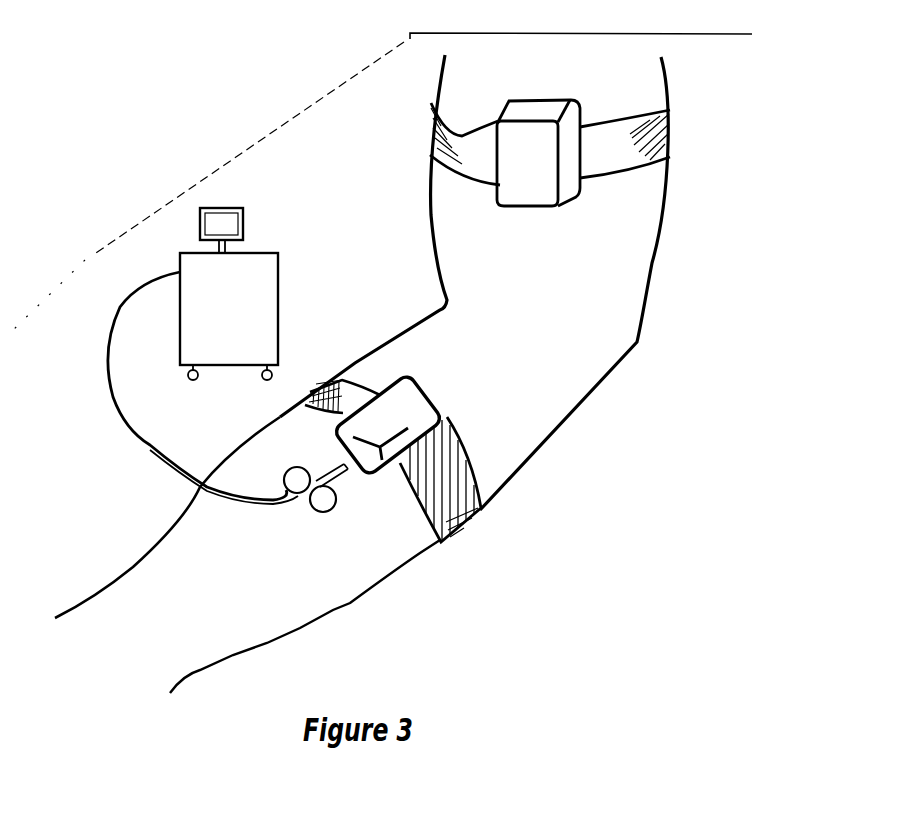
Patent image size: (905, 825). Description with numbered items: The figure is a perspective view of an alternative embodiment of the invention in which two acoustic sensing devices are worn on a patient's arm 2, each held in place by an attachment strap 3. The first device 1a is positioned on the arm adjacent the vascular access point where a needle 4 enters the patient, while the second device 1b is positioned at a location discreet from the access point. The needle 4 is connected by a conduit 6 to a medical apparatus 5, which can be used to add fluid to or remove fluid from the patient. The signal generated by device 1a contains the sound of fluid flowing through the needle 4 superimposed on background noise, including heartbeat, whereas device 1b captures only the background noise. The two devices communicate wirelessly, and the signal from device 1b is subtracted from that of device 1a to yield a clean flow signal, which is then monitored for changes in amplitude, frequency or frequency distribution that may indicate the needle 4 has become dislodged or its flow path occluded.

The device 1a is at (393, 407).
The device 1b is at (520, 180).
The patient's arm 2 is at (388, 536).
The attachment strap 3 is at (465, 525).
The needle 4 is at (330, 467).
The medical apparatus 5 is at (255, 292).
The conduit 6 is at (140, 440).